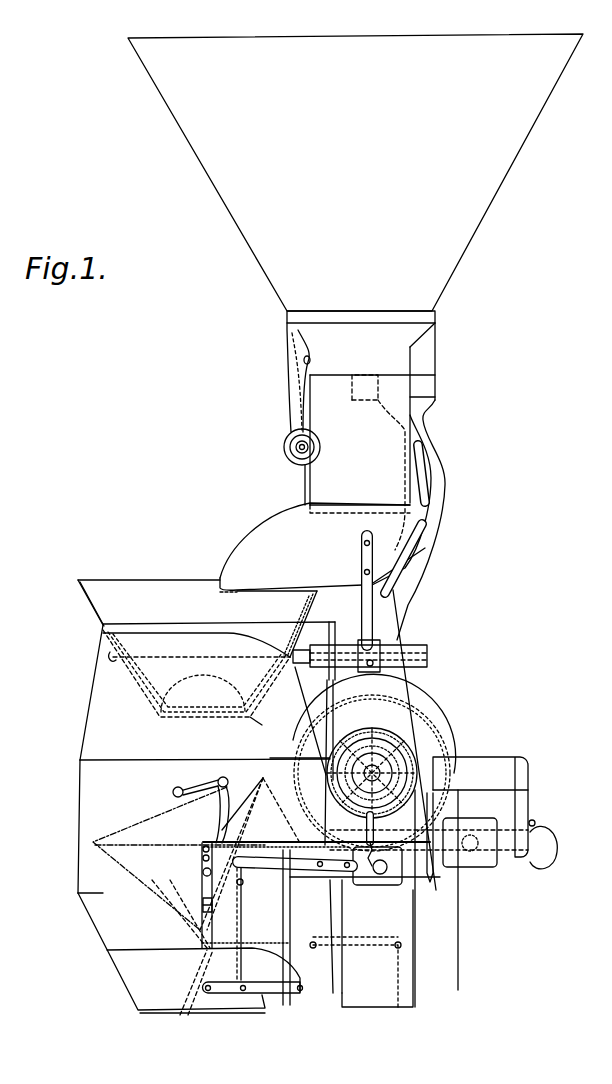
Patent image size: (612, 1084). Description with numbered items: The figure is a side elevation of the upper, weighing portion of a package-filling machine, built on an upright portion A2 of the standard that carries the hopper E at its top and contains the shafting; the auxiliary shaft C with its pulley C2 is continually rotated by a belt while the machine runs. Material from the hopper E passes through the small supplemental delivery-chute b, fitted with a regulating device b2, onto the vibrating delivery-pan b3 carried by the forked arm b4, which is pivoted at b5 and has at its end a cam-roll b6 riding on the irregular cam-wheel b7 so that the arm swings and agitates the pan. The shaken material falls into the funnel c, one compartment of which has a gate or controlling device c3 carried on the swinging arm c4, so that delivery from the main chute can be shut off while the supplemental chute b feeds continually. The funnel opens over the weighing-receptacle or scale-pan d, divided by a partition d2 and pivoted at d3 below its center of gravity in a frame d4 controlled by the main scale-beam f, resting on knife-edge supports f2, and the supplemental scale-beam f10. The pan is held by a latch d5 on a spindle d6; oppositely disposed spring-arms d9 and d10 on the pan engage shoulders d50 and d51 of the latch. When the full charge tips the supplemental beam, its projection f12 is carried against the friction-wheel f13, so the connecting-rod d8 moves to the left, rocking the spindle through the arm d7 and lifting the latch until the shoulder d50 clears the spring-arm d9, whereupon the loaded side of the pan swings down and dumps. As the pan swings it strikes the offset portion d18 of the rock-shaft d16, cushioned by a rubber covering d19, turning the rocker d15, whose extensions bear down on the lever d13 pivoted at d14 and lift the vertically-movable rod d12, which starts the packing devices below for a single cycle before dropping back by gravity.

The hopper E is at (355, 178).
The delivery-chute b is at (372, 436).
The regulating device b2 is at (305, 488).
The vibrating delivery-pan b3 is at (322, 547).
The forked support or arm b4 is at (396, 616).
The pivot b5 is at (385, 660).
The upright portion A2 is at (407, 678).
The funnel c is at (150, 596).
The swinging arm or support c4 is at (140, 700).
The controlling device c3 is at (251, 730).
The auxiliary shaft C is at (420, 750).
The pulley C2 is at (415, 708).
The cam-wheel b7 is at (400, 737).
The cam-roll b6 is at (380, 768).
The weighing-receptacle d is at (93, 816).
The partition d2 is at (245, 845).
The pivot d3 is at (202, 862).
The frame d4 is at (214, 902).
The trigger or latch d5 is at (225, 777).
The pivotal support or spindle d6 is at (262, 776).
The downwardly-projecting arm d7 is at (242, 799).
The link or connecting-rod d8 is at (294, 830).
The spring-arm d9 is at (214, 830).
The spring-arm d10 is at (243, 888).
The vertically-movable rod d12 is at (396, 1008).
The lever d13 is at (372, 950).
The pivot d14 is at (305, 982).
The rocker d15 is at (190, 950).
The rock-shaft d16 is at (200, 965).
The curved or offset portion d18 is at (182, 962).
The yielding covering d19 is at (200, 940).
The shoulder d50 is at (176, 788).
The shoulder d51 is at (198, 787).
The main scale-beam f is at (528, 858).
The knife-edge supports f2 is at (320, 890).
The supplemental scale-beam f10 is at (431, 884).
The projection f12 is at (455, 820).
The friction-wheel f13 is at (440, 782).